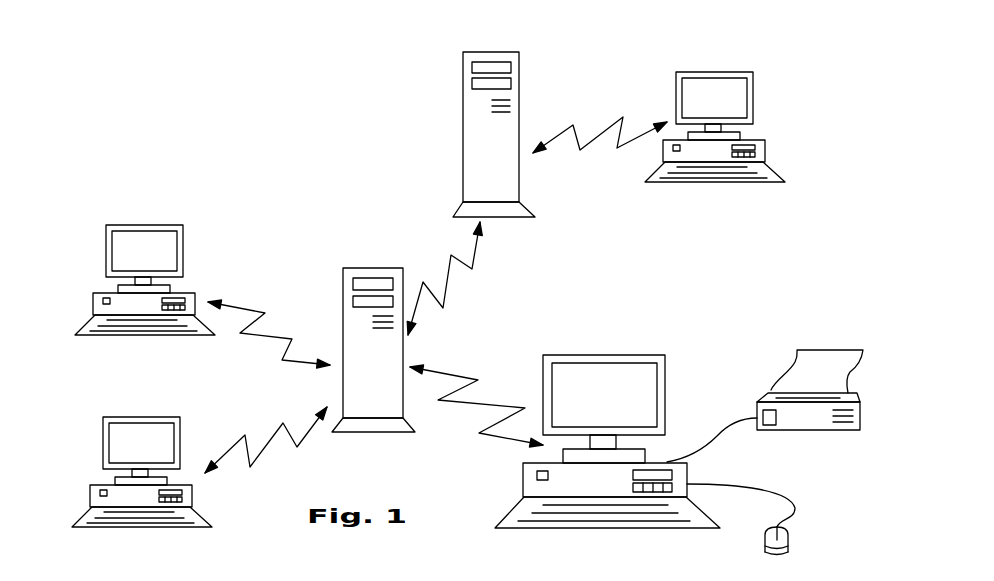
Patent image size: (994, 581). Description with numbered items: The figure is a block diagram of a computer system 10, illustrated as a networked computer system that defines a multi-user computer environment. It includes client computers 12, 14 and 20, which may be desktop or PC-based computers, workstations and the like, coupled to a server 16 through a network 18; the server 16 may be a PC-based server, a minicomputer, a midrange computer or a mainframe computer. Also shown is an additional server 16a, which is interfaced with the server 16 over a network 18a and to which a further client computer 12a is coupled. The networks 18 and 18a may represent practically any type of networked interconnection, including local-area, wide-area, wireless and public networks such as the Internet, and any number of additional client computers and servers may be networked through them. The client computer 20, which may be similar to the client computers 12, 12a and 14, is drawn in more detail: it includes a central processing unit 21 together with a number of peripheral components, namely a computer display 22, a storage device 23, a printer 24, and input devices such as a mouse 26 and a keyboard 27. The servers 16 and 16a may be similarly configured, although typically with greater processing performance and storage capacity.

The computer system 10 is at (532, 271).
The client computer 12 is at (106, 243).
The client computer 12a is at (676, 87).
The client computer 14 is at (103, 420).
The server 16 is at (360, 268).
The additional server 16a is at (463, 72).
The network 18 is at (277, 338).
The network 18a is at (452, 237).
The client computer 20 is at (659, 351).
The central processing unit 21 is at (533, 485).
The computer display 22 is at (577, 356).
The storage device 23 is at (648, 493).
The printer 24 is at (772, 398).
The mouse 26 is at (783, 543).
The keyboard 27 is at (512, 527).